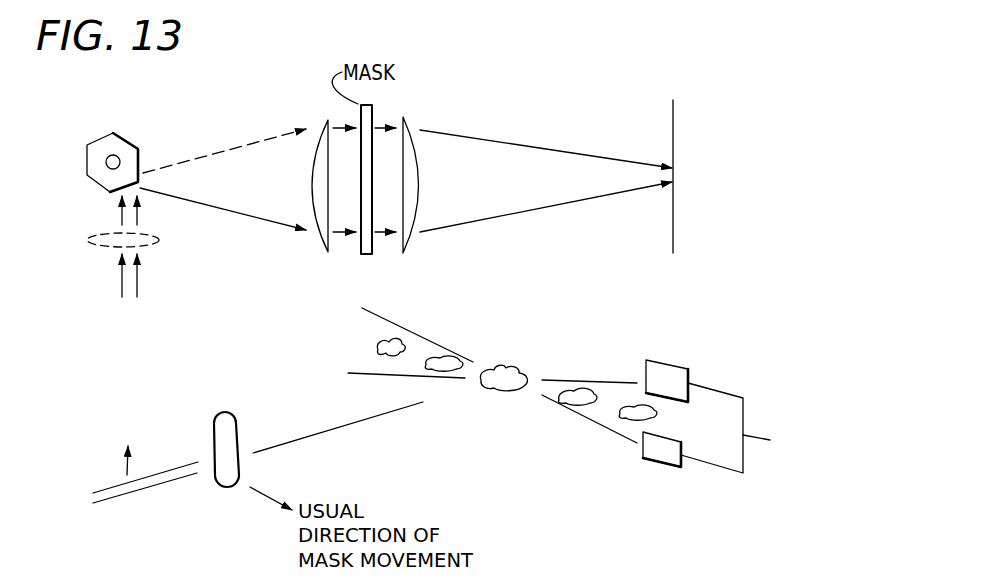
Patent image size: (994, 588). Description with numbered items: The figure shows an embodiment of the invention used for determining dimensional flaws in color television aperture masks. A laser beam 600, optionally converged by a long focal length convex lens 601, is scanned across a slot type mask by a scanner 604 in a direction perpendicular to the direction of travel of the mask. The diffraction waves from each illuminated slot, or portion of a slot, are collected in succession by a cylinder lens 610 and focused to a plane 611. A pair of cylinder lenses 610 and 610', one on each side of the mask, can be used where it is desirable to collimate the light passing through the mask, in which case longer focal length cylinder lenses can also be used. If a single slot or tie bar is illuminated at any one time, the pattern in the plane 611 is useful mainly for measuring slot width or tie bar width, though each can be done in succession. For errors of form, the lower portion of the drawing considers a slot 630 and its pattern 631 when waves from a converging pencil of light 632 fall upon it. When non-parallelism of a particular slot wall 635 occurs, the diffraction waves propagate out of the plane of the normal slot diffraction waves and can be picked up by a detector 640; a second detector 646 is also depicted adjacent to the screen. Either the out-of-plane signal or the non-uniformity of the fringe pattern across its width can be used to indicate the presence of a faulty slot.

The laser beam 600 is at (138, 280).
The long focal length convex lens 601 is at (160, 236).
The scanner 604 is at (114, 132).
The cylinder lens 610 is at (305, 171).
The cylinder lens 610' is at (433, 171).
The plane 611 is at (551, 160).
The slot 630 is at (213, 432).
The pattern 631 is at (372, 336).
The converging pencil of light 632 is at (106, 500).
The slot wall 635 is at (238, 437).
The detector 640 is at (690, 374).
The detector plate 646 is at (653, 458).